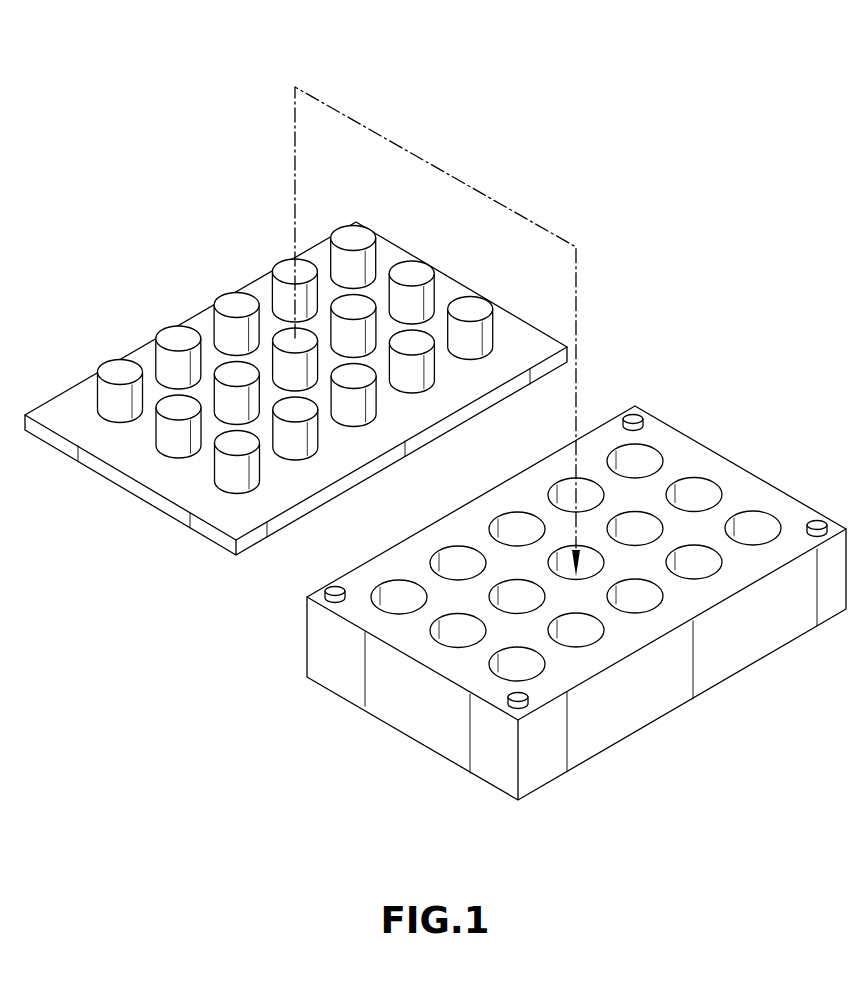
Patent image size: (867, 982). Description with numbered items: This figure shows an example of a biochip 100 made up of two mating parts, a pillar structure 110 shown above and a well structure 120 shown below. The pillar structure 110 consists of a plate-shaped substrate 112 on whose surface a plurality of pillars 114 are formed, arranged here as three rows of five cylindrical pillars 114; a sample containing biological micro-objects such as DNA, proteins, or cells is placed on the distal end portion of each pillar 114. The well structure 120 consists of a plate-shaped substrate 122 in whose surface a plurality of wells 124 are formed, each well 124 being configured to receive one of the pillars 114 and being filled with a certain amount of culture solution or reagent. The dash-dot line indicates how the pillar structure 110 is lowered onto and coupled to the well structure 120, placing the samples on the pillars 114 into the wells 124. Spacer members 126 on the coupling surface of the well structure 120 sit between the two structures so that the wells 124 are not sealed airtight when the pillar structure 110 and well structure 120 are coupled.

The biochip 100 is at (220, 55).
The pillar structure 110 is at (296, 401).
The plate-shaped substrate 112 is at (515, 338).
The pillars 114 is at (452, 325).
The well structure 120 is at (576, 584).
The plate-shaped substrate 122 is at (777, 501).
The wells 124 is at (702, 493).
The spacer members 126 is at (636, 412).